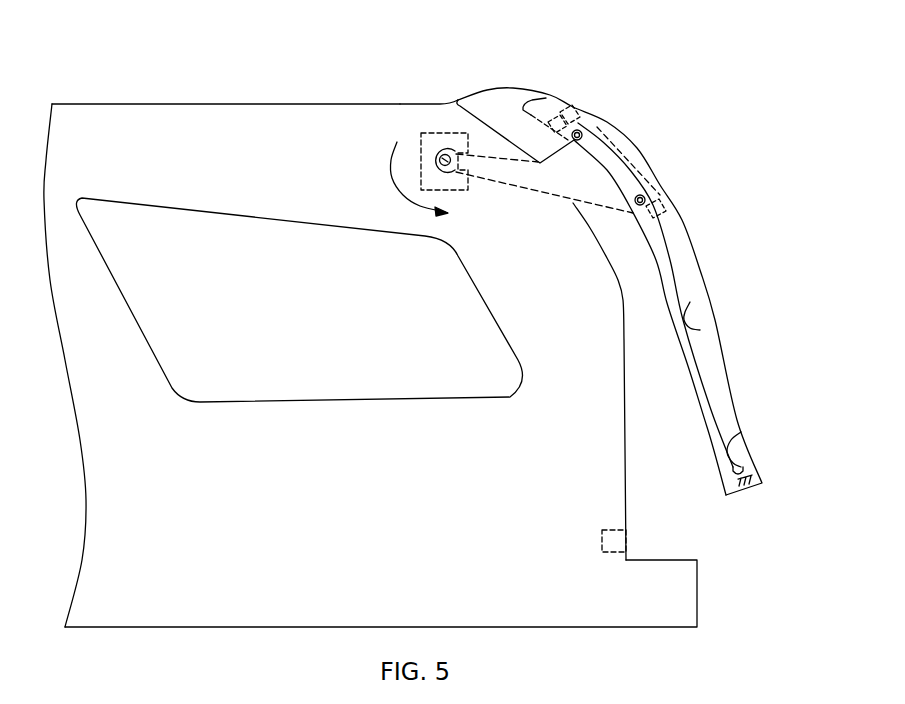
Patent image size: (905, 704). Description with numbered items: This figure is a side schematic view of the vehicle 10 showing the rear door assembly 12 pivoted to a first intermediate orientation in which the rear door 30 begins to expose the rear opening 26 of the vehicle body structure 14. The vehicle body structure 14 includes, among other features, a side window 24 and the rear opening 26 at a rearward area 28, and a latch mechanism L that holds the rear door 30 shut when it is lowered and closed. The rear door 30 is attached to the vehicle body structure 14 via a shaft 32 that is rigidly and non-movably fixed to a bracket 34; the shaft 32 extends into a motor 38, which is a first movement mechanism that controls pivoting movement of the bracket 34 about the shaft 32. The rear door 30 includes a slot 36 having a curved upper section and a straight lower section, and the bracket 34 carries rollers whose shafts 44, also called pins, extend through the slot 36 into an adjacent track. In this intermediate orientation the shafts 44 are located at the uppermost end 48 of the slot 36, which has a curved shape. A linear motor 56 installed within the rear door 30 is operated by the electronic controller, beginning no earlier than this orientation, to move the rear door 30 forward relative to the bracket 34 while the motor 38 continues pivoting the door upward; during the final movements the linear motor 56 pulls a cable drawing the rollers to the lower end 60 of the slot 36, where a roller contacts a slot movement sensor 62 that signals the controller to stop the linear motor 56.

The vehicle 10 is at (122, 48).
The rear door assembly 12 is at (491, 90).
The vehicle body structure 14 is at (263, 102).
The side window 24 is at (310, 355).
The rear opening 26 is at (627, 403).
The rearward area 28 is at (443, 120).
The rear door 30 is at (692, 239).
The shaft 32 is at (455, 172).
The bracket 34 is at (552, 177).
The slot 36 is at (700, 328).
The motor 38 is at (420, 135).
The shafts of the rollers 44 is at (603, 126).
The uppermost end of the slot 48 is at (613, 160).
The linear motor 56 is at (547, 97).
The lower end of the slot 60 is at (741, 432).
The slot movement sensor 62 is at (578, 107).
The latch mechanism L is at (612, 555).